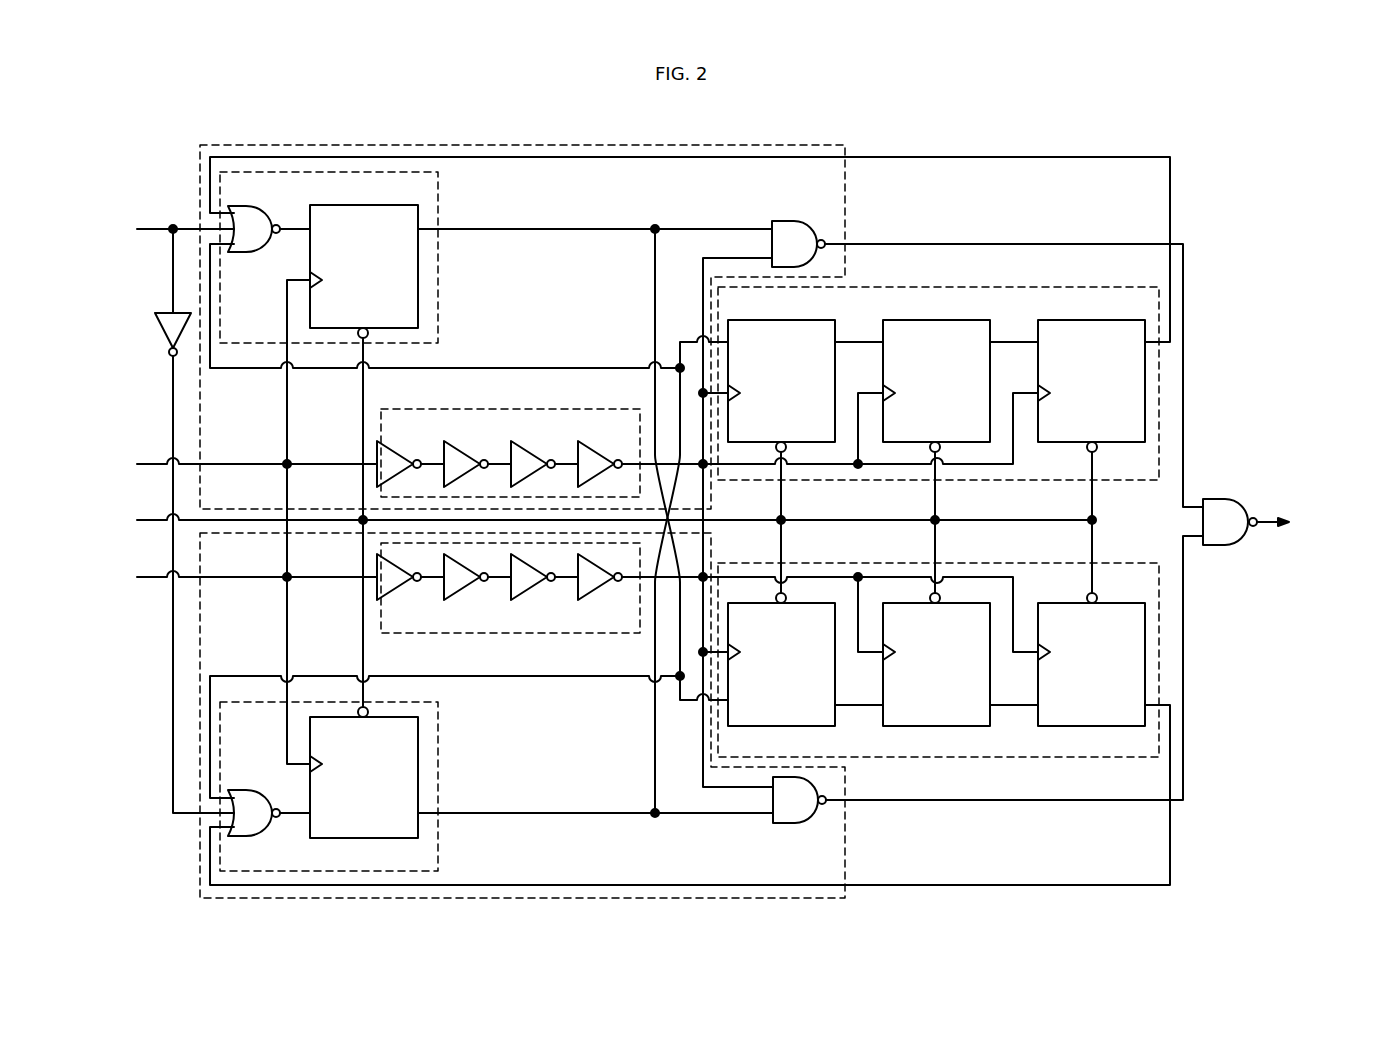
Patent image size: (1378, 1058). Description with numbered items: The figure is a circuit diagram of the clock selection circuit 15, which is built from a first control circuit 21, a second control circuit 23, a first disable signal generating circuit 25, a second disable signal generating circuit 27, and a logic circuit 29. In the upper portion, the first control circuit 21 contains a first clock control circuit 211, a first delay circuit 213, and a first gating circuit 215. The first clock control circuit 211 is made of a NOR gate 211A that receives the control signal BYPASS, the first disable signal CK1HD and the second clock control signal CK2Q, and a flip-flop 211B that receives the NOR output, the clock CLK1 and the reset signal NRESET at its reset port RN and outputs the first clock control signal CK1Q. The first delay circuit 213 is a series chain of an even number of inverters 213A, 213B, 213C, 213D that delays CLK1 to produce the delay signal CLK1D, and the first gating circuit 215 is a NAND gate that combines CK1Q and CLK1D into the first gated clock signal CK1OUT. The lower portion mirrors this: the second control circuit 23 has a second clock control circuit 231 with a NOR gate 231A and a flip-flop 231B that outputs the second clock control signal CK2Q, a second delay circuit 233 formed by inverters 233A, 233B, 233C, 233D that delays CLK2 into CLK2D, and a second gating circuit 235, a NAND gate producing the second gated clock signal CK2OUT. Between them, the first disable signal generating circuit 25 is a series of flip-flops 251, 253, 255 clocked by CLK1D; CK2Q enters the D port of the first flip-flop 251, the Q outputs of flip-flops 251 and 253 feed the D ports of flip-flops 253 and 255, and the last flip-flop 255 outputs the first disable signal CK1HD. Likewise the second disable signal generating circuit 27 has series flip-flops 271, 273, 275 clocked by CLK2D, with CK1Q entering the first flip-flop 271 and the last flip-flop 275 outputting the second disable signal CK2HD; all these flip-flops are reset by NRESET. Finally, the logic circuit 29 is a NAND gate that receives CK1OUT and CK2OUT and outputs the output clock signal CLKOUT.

The clock selection circuit 15 is at (1226, 134).
The first control circuit 21 is at (845, 193).
The second control circuit 23 is at (845, 856).
The first disable signal generating circuit 25 is at (935, 287).
The second disable signal generating circuit 27 is at (938, 760).
The logic circuit 29 is at (1218, 499).
The first clock control circuit 211 is at (438, 275).
The NOR gate 211A is at (244, 207).
The flip-flop 211B is at (368, 205).
The first delay circuit 213 is at (507, 408).
The inverter 213A is at (397, 455).
The inverter 213B is at (464, 455).
The inverter 213C is at (531, 455).
The inverter 213D is at (598, 455).
The first gating circuit 215 is at (790, 221).
The second clock control circuit 231 is at (438, 767).
The NOR gate 231A is at (244, 835).
The flip-flop 231B is at (368, 839).
The second delay circuit 233 is at (505, 634).
The inverter 233A is at (397, 587).
The inverter 233B is at (464, 587).
The inverter 233C is at (531, 587).
The inverter 233D is at (598, 587).
The second gating circuit 235 is at (787, 823).
The first flip-flop 251 is at (785, 320).
The second flip-flop 253 is at (938, 320).
The last flip-flop 255 is at (1093, 320).
The first flip-flop 271 is at (785, 727).
The second flip-flop 273 is at (940, 727).
The last flip-flop 275 is at (1095, 727).